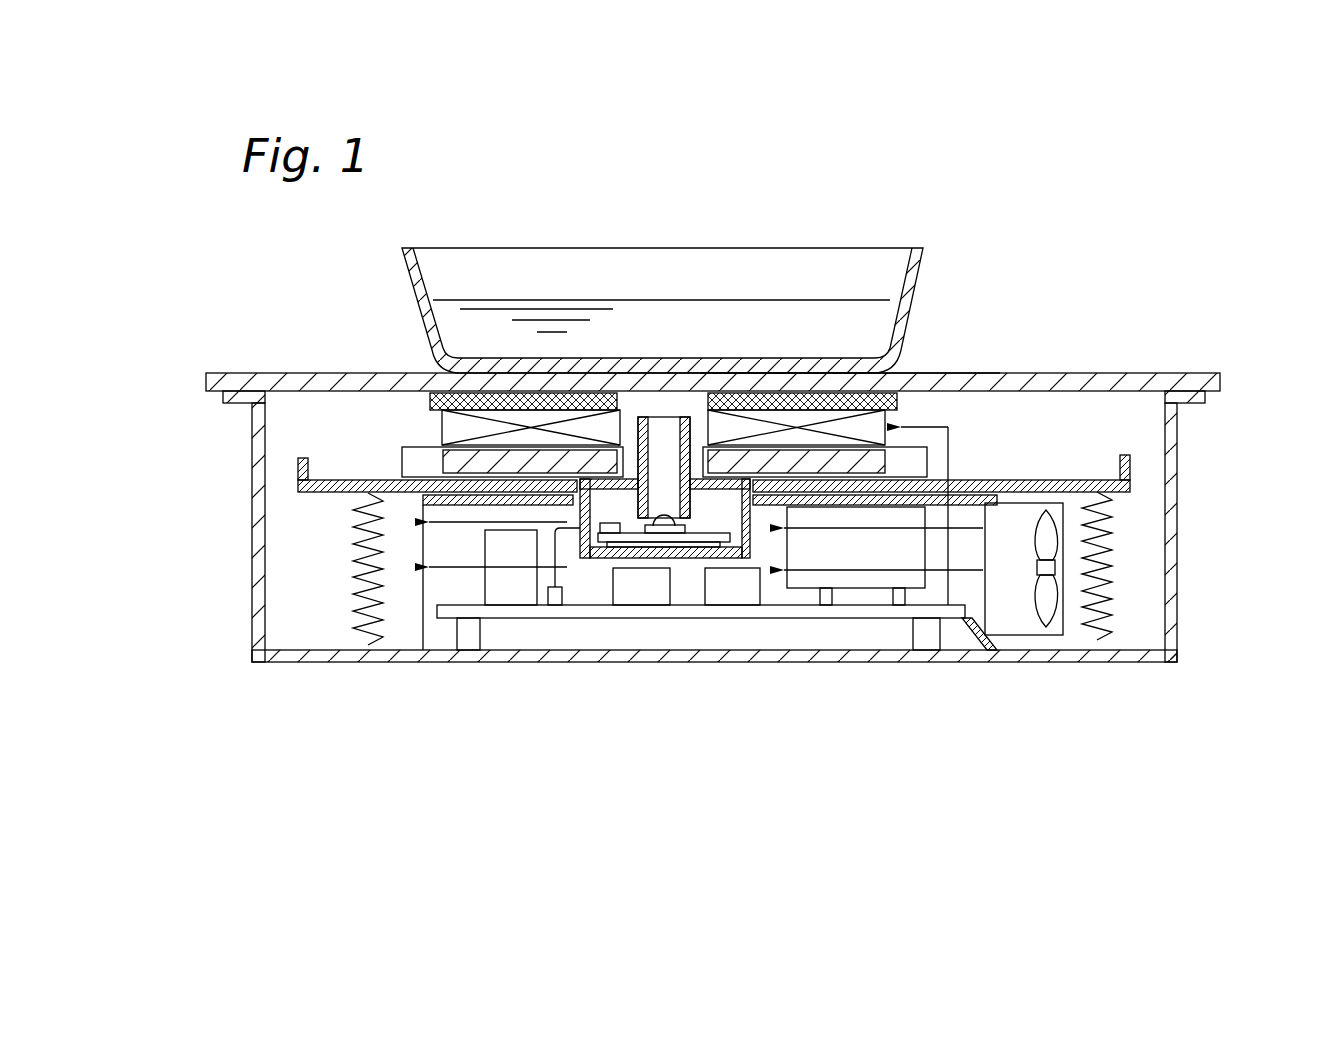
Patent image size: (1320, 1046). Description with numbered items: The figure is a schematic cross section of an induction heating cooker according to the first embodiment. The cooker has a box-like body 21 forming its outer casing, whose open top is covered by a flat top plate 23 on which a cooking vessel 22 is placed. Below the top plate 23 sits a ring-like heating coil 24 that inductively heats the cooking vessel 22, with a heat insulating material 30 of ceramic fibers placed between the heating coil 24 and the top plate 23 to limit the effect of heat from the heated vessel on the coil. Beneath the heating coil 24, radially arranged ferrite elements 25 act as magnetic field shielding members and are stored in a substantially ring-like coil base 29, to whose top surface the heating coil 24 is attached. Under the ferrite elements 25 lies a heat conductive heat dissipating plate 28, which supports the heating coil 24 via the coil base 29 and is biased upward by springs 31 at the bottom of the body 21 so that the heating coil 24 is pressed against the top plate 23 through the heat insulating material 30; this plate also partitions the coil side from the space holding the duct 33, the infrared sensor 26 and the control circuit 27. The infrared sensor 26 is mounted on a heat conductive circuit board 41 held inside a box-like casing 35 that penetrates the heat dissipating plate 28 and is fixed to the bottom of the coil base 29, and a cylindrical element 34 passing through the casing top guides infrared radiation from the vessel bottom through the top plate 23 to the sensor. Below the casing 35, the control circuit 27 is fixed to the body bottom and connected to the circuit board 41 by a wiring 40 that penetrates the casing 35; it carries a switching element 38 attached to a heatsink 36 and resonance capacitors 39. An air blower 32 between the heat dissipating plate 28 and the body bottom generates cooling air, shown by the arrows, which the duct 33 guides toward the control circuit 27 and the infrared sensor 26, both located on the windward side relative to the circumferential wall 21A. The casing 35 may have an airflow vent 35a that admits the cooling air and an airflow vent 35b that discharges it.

The body 21 is at (683, 573).
The circumferential wall 21A is at (251, 459).
The cooking vessel 22 is at (912, 263).
The top plate 23 is at (1123, 381).
The heating coil 24 is at (450, 427).
The ferrite elements 25 is at (455, 457).
The infrared sensor 26 is at (673, 535).
The control circuit 27 is at (502, 632).
The heat dissipating plate 28 is at (325, 493).
The coil base 29 is at (917, 458).
The heat insulating material 30 is at (882, 388).
The springs 31 is at (353, 578).
The air blower 32 is at (1048, 598).
The duct 33 is at (1003, 500).
The cylindrical element 34 is at (665, 458).
The casing 35 is at (697, 631).
The airflow vent 35a is at (753, 553).
The airflow vent 35b is at (582, 533).
The heatsink 36 is at (856, 622).
The switching element 38 is at (837, 597).
The resonance capacitors 39 is at (642, 588).
The wiring 40 is at (550, 555).
The circuit board 41 is at (693, 540).